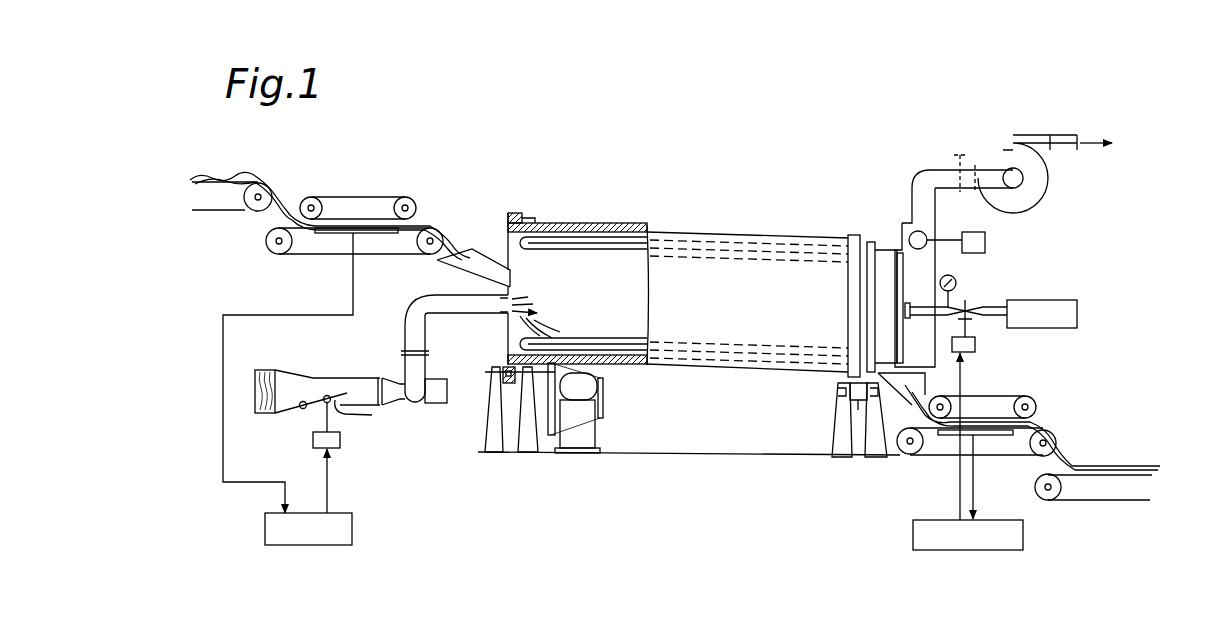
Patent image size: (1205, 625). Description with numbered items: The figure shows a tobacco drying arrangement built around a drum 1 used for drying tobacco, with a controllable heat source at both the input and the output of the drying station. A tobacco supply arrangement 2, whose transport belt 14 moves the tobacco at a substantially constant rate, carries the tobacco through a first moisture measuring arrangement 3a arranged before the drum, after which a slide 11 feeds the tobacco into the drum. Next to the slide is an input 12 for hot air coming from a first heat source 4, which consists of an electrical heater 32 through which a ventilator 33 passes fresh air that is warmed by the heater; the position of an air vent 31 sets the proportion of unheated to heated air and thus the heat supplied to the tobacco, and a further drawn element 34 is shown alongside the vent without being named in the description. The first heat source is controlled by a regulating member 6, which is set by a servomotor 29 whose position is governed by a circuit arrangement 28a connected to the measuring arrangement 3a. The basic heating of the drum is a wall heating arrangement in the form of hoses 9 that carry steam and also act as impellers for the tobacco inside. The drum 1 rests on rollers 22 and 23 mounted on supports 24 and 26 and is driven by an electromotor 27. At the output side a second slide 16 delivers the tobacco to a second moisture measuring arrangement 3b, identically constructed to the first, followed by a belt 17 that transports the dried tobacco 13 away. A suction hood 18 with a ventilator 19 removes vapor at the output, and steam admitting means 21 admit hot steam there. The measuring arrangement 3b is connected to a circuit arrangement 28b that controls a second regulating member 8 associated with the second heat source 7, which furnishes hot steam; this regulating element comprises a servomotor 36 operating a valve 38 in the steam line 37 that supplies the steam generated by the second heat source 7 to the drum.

The drum 1 is at (737, 170).
The tobacco supply arrangement 2 is at (214, 168).
The first moisture measuring arrangement 3a is at (361, 178).
The second moisture measuring arrangement 3b is at (1083, 376).
The first heat source 4 is at (304, 380).
The regulating member 6 is at (304, 421).
The second heat source 7 is at (1057, 300).
The second regulating member 8 is at (983, 336).
The hoses 9 is at (594, 335).
The slide 11 is at (473, 250).
The input for hot air 12 is at (512, 300).
The dried tobacco 13 is at (245, 178).
The transport belt 14 is at (193, 190).
The second slide 16 is at (903, 384).
The belt 17 is at (1135, 478).
The suction hood 18 is at (902, 225).
The ventilator 19 is at (1010, 135).
The steam admitting means 21 is at (905, 318).
The roller 22 is at (520, 385).
The roller 23 is at (858, 408).
The support 24 is at (523, 382).
The support 26 is at (870, 393).
The electromotor 27 is at (578, 386).
The circuit arrangement 28a is at (288, 389).
The circuit arrangement 28b is at (968, 451).
The servomotor 29 is at (313, 441).
The air vent 31 is at (327, 396).
The electrical heater 32 is at (272, 390).
The ventilator 33 is at (412, 412).
The fuel line 34 is at (365, 415).
The servomotor 36 is at (970, 354).
The steam line 37 is at (926, 300).
The valve 38 is at (967, 306).